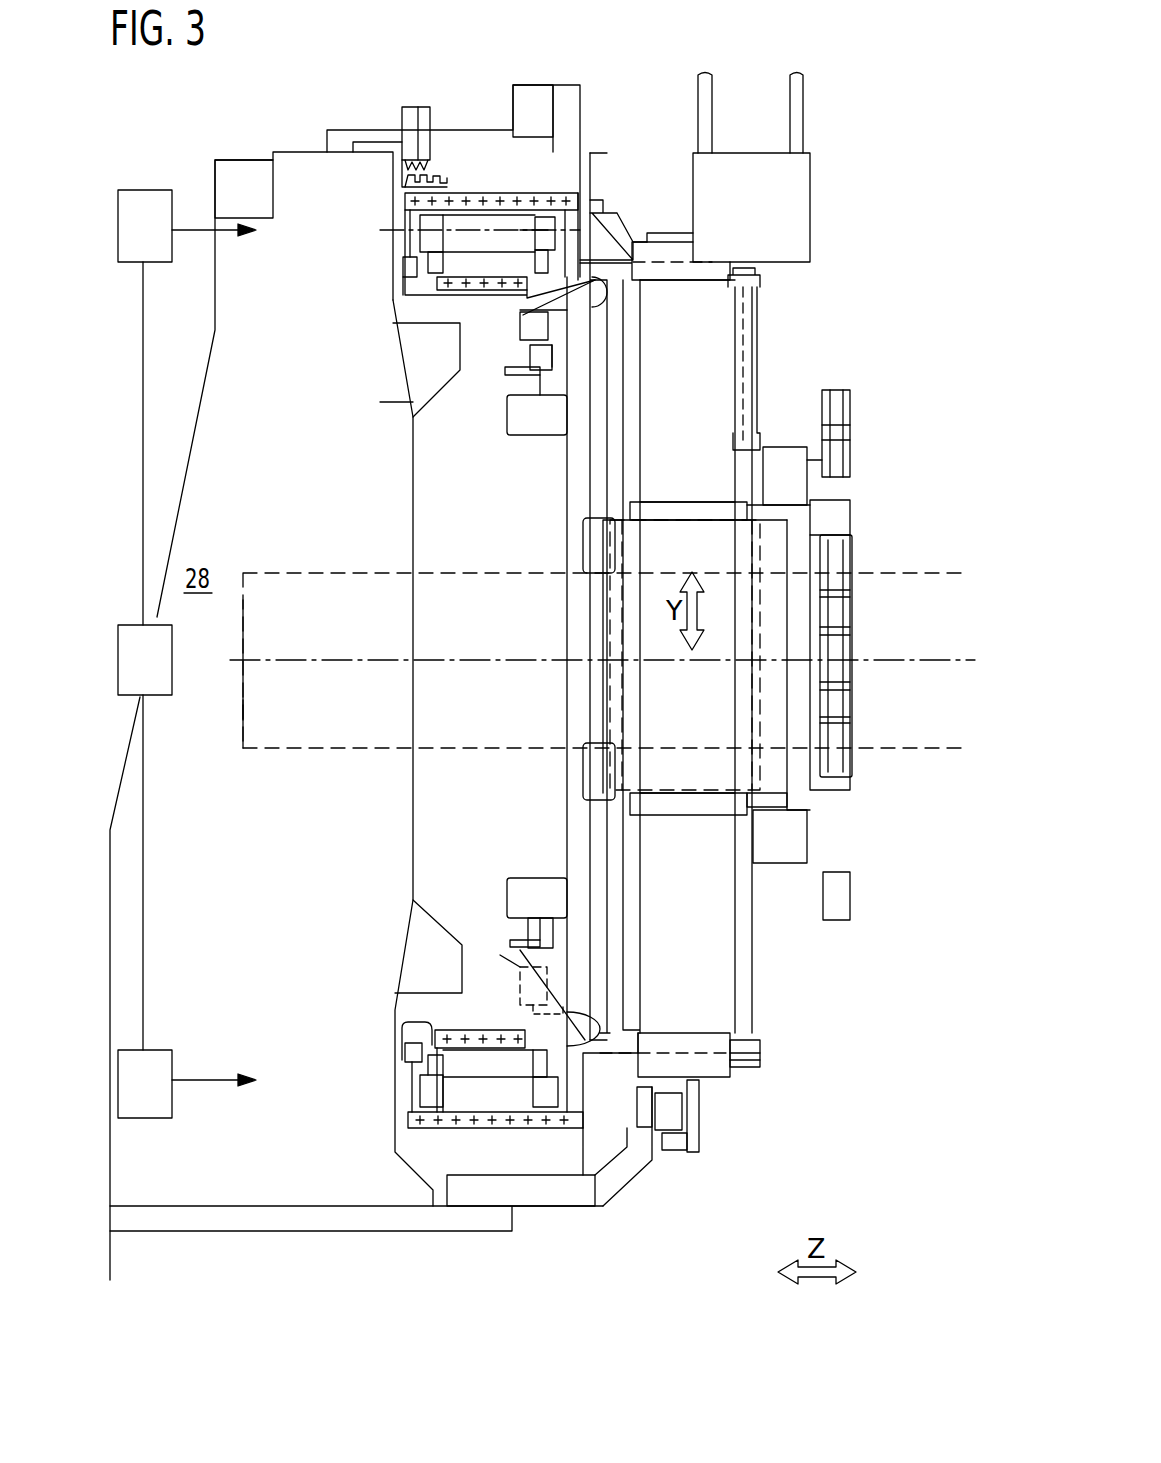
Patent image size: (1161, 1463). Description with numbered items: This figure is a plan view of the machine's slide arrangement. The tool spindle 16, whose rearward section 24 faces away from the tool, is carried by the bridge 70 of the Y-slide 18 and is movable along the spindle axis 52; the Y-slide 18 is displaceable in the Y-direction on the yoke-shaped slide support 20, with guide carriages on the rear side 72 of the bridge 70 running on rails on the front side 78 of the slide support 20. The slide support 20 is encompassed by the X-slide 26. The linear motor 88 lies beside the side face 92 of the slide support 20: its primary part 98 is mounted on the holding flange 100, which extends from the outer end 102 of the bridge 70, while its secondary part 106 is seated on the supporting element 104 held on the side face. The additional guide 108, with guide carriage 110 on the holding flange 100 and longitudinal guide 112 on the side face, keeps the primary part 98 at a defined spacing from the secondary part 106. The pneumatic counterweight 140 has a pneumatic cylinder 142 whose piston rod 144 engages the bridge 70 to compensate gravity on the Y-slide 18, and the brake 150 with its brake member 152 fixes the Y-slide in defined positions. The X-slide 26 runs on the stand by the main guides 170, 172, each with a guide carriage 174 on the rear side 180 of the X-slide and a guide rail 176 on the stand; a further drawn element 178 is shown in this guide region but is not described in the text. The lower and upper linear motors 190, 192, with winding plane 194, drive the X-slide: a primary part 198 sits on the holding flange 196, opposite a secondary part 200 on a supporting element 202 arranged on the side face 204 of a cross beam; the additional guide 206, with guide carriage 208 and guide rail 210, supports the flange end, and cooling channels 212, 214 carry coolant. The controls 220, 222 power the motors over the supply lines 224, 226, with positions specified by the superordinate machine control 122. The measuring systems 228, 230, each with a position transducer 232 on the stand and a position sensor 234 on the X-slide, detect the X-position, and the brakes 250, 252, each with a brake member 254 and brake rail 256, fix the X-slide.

The tool spindle 16 is at (862, 728).
The Y-slide 18 is at (868, 513).
The slide support 20 is at (615, 870).
The rearward section 24 is at (320, 750).
The X-slide 26 is at (668, 1053).
The spindle axis 52 is at (372, 663).
The bridge 70 is at (790, 510).
The rear side 72 is at (748, 790).
The front side 78 is at (625, 307).
The linear motor 88 is at (715, 398).
The side face 92 is at (762, 288).
The primary part 98 is at (760, 688).
The holding flange 100 is at (778, 647).
The outer end 102 is at (798, 588).
The supporting element 104 is at (715, 270).
The secondary part 106 is at (720, 422).
The additional guide 108 is at (572, 553).
The guide carriage 110 is at (582, 525).
The longitudinal guide 112 is at (598, 500).
The machine control 122 is at (163, 698).
The pneumatic counterweight 140 is at (795, 160).
The pneumatic cylinder 142 is at (782, 213).
The piston rod 144 is at (762, 348).
The brake 150 is at (800, 433).
The brake member 152 is at (790, 465).
The main guide 170 is at (575, 966).
The main guide 172 is at (520, 325).
The guide carriage 174 is at (545, 350).
The guide rail 176 is at (530, 355).
The shaft 178 is at (505, 327).
The rear side 180 is at (567, 470).
The linear motor 190 is at (580, 1145).
The linear motor 192 is at (495, 180).
The winding plane 194 is at (380, 230).
The holding flange 196 is at (407, 203).
The primary part 198 is at (528, 295).
The secondary part 200 is at (514, 222).
The supporting element 202 is at (440, 278).
The side face 204 is at (523, 970).
The additional guide 206 is at (392, 1088).
The guide carriage 208 is at (413, 1020).
The guide rail 210 is at (405, 1050).
The cooling channels 212 is at (408, 192).
The cooling channels 214 is at (405, 266).
The control 220 is at (138, 1120).
The control 222 is at (133, 200).
The supply line 224 is at (205, 1082).
The signal line 226 is at (190, 228).
The measuring system 228 is at (712, 1135).
The measuring system 230 is at (565, 80).
The position transducer 232 is at (677, 1113).
The position sensor 234 is at (675, 1150).
The brake 250 is at (505, 873).
The brake 252 is at (505, 447).
The brake member 254 is at (510, 900).
The brake rail 256 is at (512, 942).